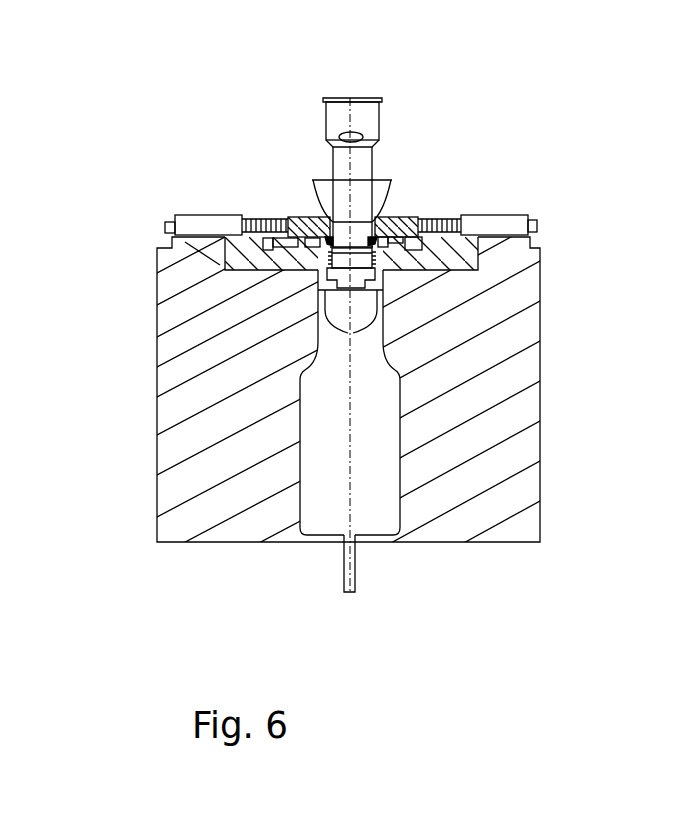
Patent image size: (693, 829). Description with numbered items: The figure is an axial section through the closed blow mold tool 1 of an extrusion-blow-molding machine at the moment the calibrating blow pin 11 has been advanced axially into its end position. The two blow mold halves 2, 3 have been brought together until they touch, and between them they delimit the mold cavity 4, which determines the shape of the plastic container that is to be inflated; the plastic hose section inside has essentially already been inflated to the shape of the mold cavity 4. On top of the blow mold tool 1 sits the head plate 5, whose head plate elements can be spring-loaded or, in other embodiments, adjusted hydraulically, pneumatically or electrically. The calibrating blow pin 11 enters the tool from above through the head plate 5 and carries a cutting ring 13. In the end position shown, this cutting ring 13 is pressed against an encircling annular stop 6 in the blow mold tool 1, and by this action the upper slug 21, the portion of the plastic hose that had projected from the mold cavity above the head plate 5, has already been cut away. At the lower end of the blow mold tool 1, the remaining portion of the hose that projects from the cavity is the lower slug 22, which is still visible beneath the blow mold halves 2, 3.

The blow mold tool 1 is at (552, 48).
The blow mold half 2 is at (168, 445).
The blow mold half 3 is at (528, 412).
The mold cavity 4 is at (380, 512).
The head plate 5 is at (398, 223).
The annular stop 6 is at (288, 217).
The calibrating blow pin 11 is at (337, 157).
The cutting ring 13 is at (478, 237).
The upper slug 21 is at (382, 190).
The lower slug 22 is at (344, 578).